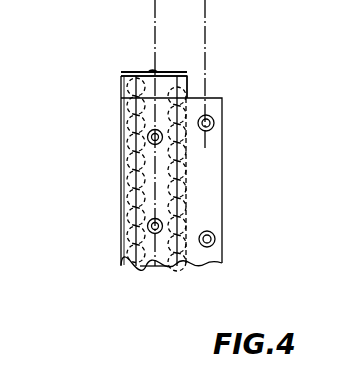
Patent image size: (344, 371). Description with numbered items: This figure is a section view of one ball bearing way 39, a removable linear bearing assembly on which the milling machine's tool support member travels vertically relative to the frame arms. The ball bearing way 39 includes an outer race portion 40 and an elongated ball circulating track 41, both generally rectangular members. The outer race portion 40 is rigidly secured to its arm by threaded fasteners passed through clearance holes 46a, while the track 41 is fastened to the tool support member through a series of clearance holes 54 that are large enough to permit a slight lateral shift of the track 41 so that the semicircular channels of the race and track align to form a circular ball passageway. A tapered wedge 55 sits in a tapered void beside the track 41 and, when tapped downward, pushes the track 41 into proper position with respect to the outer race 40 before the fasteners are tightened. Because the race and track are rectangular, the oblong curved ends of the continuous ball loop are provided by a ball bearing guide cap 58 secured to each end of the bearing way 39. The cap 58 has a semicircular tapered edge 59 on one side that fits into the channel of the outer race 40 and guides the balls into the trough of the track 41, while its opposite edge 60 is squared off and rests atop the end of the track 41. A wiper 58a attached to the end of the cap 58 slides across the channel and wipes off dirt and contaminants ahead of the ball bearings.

The squared-off edge 60 is at (119, 73).
The wiper 58a is at (133, 71).
The ball bearing guide cap 58 is at (126, 87).
The semicircular tapered edge 59 is at (187, 96).
The tapered wedge 55 is at (122, 182).
The clearance holes 54 is at (147, 138).
The outer race portion 40 is at (204, 193).
The clearance holes 46a is at (214, 122).
The ball bearing way 39 is at (105, 270).
The ball circulating track 41 is at (153, 266).